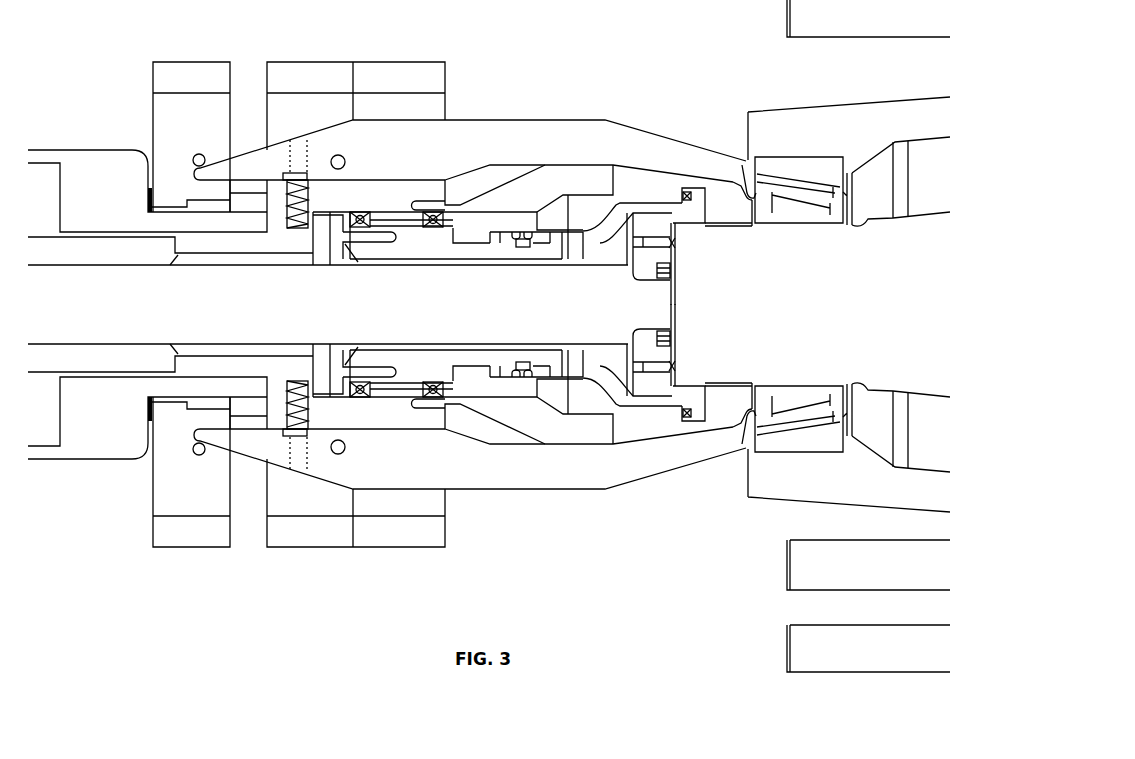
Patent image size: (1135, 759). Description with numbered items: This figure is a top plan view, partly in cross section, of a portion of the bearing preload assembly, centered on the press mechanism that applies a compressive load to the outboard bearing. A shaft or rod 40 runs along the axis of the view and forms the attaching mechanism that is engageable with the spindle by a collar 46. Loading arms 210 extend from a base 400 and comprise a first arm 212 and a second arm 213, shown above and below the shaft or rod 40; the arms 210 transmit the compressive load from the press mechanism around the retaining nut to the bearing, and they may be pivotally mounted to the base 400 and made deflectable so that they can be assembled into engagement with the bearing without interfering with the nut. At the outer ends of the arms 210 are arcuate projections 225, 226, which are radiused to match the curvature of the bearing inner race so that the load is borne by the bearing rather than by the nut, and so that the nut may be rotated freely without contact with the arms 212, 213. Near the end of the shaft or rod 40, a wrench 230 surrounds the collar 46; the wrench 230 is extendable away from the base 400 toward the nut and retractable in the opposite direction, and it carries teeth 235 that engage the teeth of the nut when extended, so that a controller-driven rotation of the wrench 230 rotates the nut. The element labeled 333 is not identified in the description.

The base 400 is at (392, 62).
The loading arms 210 is at (499, 127).
The second arm 213 is at (590, 152).
The first arm 212 is at (584, 474).
The shaft or rod 40 is at (335, 311).
The collar 46 is at (663, 383).
The wrench 230 is at (657, 207).
The teeth 235 is at (687, 420).
The arcuate projection 226 is at (748, 187).
The arcuate projection 225 is at (749, 420).
The seal tip 333 is at (747, 417).